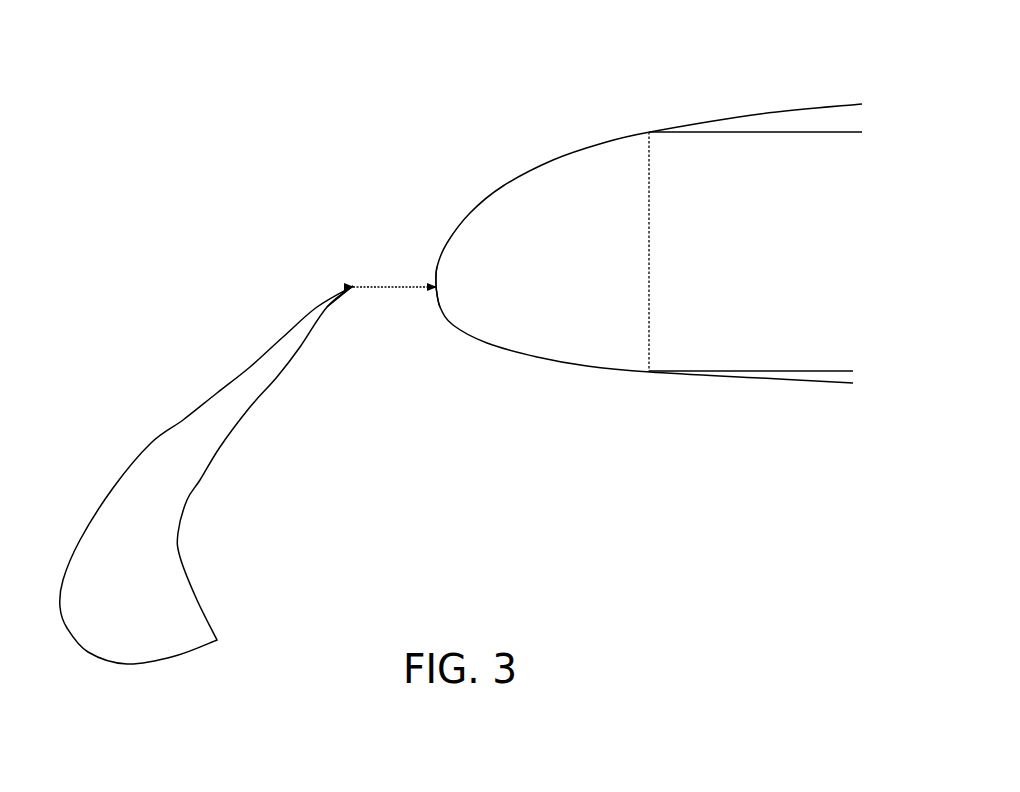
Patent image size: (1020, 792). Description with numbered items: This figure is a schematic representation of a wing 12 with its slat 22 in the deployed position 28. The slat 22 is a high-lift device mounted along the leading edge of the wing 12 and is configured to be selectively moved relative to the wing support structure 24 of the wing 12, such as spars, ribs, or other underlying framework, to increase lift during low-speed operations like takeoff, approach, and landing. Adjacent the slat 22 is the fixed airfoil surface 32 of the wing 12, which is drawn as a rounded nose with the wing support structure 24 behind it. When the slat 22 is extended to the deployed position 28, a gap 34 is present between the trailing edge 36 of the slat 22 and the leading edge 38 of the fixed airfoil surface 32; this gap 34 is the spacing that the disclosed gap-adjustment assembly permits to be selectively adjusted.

The wing 12 is at (400, 93).
The slat 22 is at (151, 437).
The wing support structure 24 is at (817, 132).
The deployed position 28 is at (302, 520).
The fixed airfoil surface 32 is at (560, 160).
The gap 34 is at (395, 290).
The trailing edge 36 is at (355, 283).
The leading edge 38 is at (435, 292).